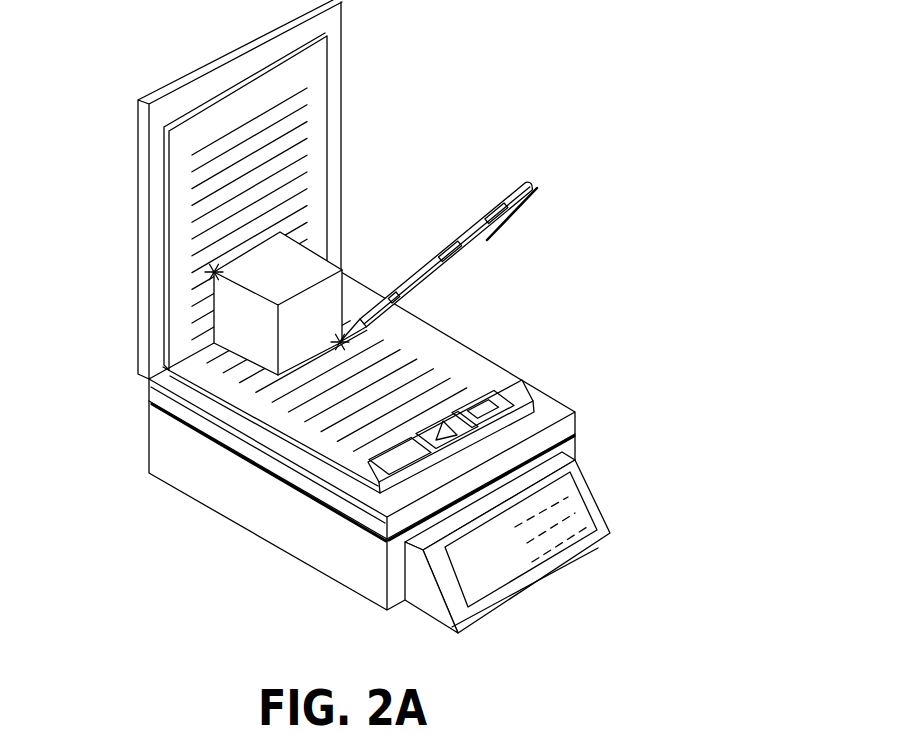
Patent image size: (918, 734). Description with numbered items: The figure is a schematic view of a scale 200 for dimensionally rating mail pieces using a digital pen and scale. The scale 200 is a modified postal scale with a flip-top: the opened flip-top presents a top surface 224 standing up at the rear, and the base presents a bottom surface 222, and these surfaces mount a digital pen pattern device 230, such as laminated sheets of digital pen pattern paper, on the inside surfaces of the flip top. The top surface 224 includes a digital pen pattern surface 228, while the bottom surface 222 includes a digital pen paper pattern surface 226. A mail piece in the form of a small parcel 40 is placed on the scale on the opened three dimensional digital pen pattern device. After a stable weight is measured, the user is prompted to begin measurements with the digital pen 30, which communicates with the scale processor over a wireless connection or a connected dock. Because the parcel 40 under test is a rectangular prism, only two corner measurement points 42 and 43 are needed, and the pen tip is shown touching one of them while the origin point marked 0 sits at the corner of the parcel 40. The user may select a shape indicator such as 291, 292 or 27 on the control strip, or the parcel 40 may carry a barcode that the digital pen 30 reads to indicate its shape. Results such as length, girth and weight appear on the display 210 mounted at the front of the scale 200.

The scale 200 is at (167, 553).
The bottom surface 222 is at (550, 415).
The top surface 224 is at (342, 12).
The digital pen pattern surface 228 is at (308, 73).
The digital pen pattern device 230 is at (180, 233).
The parcel 40 is at (302, 256).
The corner measurement point 43 is at (212, 275).
The origin reference point 0 is at (347, 268).
The digital pen 30 is at (466, 212).
The corner measurement point 42 is at (478, 378).
The shape indicator 27 is at (363, 480).
The shape indicator 292 is at (498, 403).
The shape indicator 291 is at (447, 422).
The digital pen paper pattern surface 226 is at (488, 405).
The display 210 is at (571, 516).